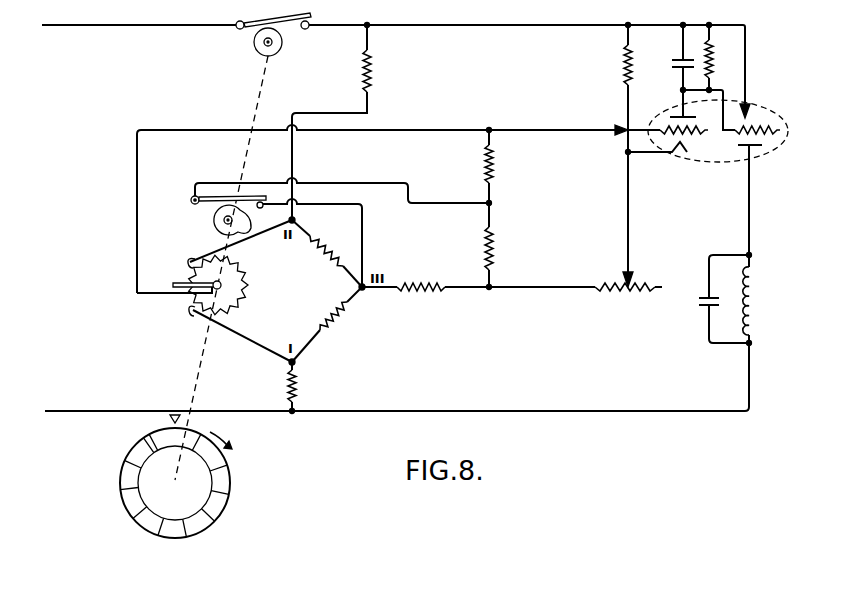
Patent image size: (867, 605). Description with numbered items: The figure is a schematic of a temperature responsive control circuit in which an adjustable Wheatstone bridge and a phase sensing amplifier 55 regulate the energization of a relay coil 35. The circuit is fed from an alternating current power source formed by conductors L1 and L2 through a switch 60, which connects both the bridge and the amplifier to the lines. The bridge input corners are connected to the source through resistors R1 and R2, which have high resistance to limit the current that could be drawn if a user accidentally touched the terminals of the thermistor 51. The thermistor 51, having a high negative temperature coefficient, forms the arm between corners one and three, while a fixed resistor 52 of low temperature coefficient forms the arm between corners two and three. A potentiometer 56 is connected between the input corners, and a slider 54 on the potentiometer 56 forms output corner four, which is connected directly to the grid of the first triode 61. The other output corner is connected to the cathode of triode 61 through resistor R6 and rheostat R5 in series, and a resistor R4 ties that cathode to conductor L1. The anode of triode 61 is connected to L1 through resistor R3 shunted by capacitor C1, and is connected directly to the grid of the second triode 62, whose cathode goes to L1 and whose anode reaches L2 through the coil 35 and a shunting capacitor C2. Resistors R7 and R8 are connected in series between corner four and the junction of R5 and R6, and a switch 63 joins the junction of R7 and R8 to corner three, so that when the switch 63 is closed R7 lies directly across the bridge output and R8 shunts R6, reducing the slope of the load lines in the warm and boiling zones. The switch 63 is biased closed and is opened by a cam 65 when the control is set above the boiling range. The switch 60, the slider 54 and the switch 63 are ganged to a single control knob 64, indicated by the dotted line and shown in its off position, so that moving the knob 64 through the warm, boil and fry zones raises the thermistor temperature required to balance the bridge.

The switch 60 is at (266, 19).
The switch 63 is at (246, 195).
The cam 65 is at (251, 229).
The potentiometer 56 is at (243, 297).
The slider 54 is at (188, 295).
The fixed resistor 52 is at (332, 249).
The thermistor 51 is at (340, 330).
The phase sensing amplifier 55 is at (703, 13).
The triode 61 is at (680, 153).
The triode 62 is at (741, 152).
The coil 35 is at (760, 290).
The control knob 64 is at (233, 487).
The resistor R1 is at (374, 66).
The resistor R2 is at (297, 384).
The resistor R3 is at (714, 64).
The resistor R4 is at (622, 70).
The rheostat R5 is at (638, 294).
The resistor R6 is at (425, 291).
The resistor R7 is at (494, 170).
The resistor R8 is at (494, 252).
The capacitor C1 is at (670, 63).
The capacitor C2 is at (702, 305).
The conductor L1 is at (110, 26).
The conductor L2 is at (84, 411).